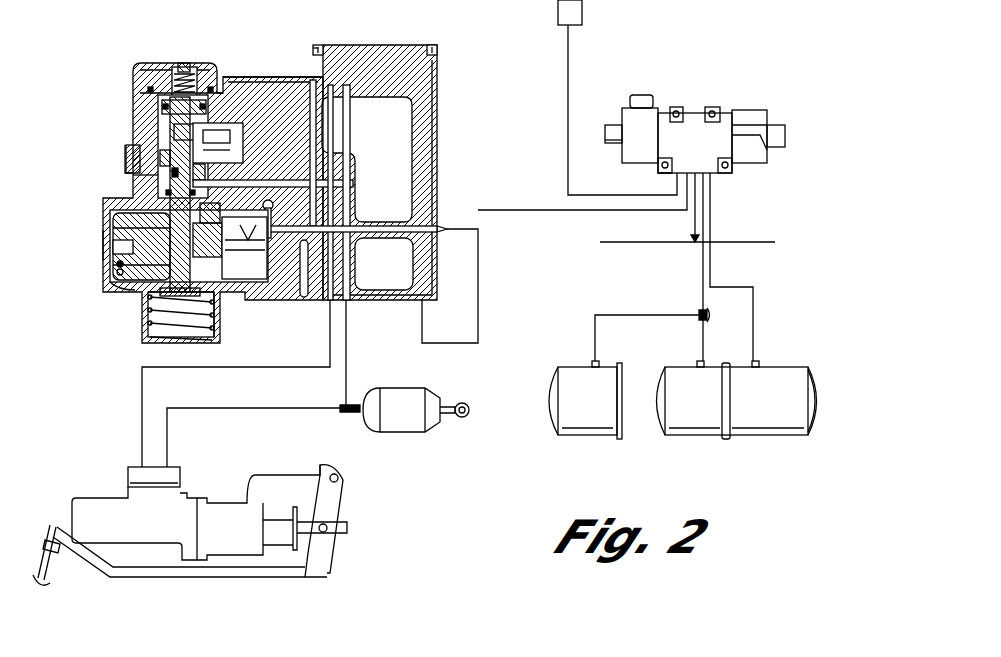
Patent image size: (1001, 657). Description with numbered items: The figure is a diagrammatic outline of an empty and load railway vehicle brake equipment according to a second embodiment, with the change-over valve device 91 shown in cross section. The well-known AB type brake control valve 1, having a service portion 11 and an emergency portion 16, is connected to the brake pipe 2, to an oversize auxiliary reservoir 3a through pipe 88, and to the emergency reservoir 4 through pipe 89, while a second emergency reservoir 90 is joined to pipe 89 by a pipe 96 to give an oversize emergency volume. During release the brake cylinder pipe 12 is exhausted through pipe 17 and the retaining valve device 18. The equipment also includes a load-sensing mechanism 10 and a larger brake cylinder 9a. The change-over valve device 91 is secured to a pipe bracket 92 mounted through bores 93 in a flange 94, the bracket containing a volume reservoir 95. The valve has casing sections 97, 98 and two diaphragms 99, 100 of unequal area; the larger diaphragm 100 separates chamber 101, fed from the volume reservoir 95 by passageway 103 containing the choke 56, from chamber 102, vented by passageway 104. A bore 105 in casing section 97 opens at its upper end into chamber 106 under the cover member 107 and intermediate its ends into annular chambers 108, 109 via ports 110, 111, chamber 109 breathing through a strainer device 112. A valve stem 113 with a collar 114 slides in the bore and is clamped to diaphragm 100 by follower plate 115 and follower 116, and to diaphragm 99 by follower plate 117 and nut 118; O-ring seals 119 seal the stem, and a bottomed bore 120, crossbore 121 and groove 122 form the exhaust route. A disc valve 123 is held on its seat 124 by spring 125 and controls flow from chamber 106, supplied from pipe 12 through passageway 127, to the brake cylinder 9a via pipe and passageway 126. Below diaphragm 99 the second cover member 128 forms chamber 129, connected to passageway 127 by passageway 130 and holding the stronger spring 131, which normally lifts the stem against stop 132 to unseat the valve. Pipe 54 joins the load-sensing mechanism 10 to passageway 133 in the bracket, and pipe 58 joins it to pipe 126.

The brake control valve 1 is at (702, 101).
The brake pipe 2 is at (690, 242).
The oversize auxiliary reservoir 3a is at (820, 427).
The emergency reservoir 4 is at (662, 428).
The brake cylinder 9a is at (402, 390).
The load-sensing mechanism 10 is at (110, 490).
The service portion 11 is at (628, 163).
The brake cylinder pipe 12 is at (422, 323).
The emergency portion 16 is at (755, 163).
The pipe 17 is at (568, 52).
The retaining valve device 18 is at (582, 12).
The pipe 54 is at (142, 404).
The choke 56 is at (312, 180).
The pipe 58 is at (167, 438).
The pipe 88 is at (755, 315).
The pipe 89 is at (716, 267).
The second emergency reservoir 90 is at (552, 428).
The change-over valve device 91 is at (130, 99).
The pipe bracket 92 is at (378, 43).
The bores 93 is at (318, 45).
The flange 94 is at (313, 46).
The volume reservoir 95 is at (393, 139).
The pipe 96 is at (660, 312).
The casing section 97 is at (112, 235).
The casing section 98 is at (110, 263).
The diaphragm 99 is at (115, 288).
The diaphragm 100 is at (112, 251).
The chamber 101 is at (115, 222).
The chamber 102 is at (113, 272).
The passageway 103 is at (335, 174).
The passageway 104 is at (276, 210).
The bore 105 is at (131, 193).
The chamber 106 is at (147, 86).
The cover member 107 is at (151, 68).
The annular chamber 108 is at (174, 130).
The annular chamber 109 is at (195, 170).
The ports 110 is at (160, 155).
The ports 111 is at (218, 146).
The strainer device 112 is at (126, 161).
The valve stem 113 is at (187, 245).
The collar 114 is at (214, 188).
The diaphragm follower plate 115 is at (246, 216).
The diaphragm follower 116 is at (147, 300).
The diaphragm follower plate 117 is at (228, 298).
The nut 118 is at (228, 330).
The O-ring seal 119 is at (180, 196).
The bottomed bore 120 is at (163, 108).
The crossbore 121 is at (172, 172).
The annular groove 122 is at (236, 130).
The valve 123 is at (197, 68).
The valve seat 124 is at (226, 80).
The spring 125 is at (176, 63).
The pipe and passageway 126 is at (347, 306).
The passageway 127 is at (450, 280).
The second cover member 128 is at (147, 326).
The chamber 129 is at (216, 340).
The passageway 130 is at (402, 226).
The spring 131 is at (160, 341).
The stop 132 is at (110, 208).
The passageway 133 is at (310, 298).